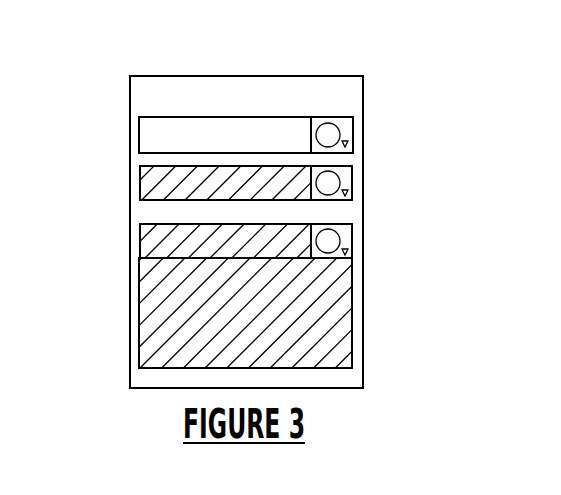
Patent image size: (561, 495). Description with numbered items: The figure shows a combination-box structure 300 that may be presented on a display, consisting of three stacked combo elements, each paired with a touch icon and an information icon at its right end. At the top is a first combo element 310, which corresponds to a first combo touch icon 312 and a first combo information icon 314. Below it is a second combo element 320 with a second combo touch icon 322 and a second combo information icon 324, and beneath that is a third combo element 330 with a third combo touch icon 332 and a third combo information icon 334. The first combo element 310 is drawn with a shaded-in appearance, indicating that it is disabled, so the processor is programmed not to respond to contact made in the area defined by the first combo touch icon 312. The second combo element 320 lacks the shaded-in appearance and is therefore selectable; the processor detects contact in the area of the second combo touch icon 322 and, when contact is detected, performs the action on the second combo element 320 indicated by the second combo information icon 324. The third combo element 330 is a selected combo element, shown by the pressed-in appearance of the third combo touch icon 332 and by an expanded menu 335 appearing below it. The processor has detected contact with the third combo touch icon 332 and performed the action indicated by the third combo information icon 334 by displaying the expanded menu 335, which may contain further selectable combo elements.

The combination-box structure 300 is at (134, 42).
The first combo element 310 is at (145, 143).
The first combo touch icon 312 is at (331, 123).
The first combo information icon 314 is at (346, 141).
The second combo element 320 is at (145, 197).
The second combo touch icon 322 is at (331, 172).
The second combo information icon 324 is at (346, 198).
The third combo element 330 is at (145, 251).
The third combo touch icon 332 is at (331, 231).
The third combo information icon 334 is at (346, 257).
The expanded menu 335 is at (332, 352).